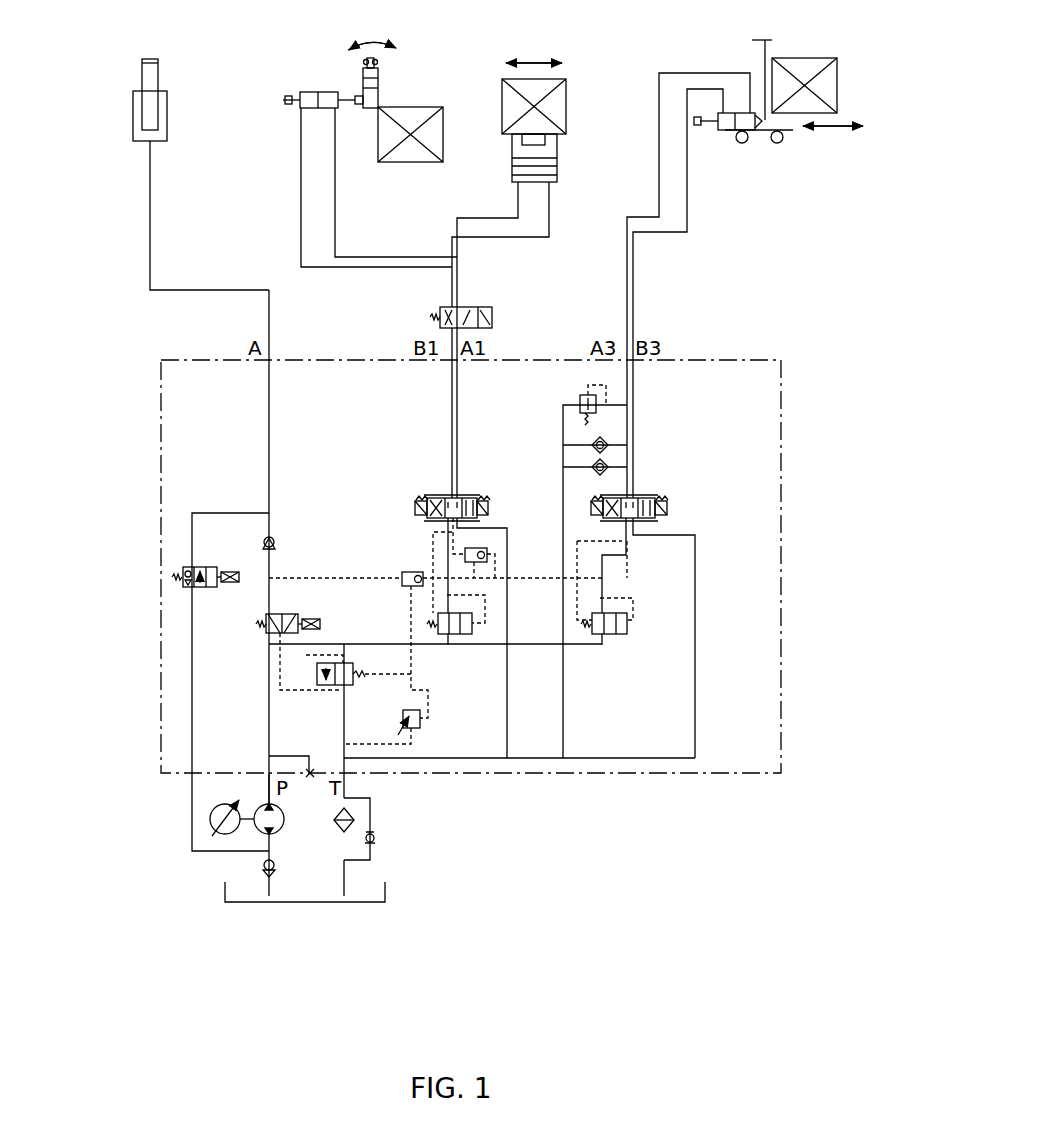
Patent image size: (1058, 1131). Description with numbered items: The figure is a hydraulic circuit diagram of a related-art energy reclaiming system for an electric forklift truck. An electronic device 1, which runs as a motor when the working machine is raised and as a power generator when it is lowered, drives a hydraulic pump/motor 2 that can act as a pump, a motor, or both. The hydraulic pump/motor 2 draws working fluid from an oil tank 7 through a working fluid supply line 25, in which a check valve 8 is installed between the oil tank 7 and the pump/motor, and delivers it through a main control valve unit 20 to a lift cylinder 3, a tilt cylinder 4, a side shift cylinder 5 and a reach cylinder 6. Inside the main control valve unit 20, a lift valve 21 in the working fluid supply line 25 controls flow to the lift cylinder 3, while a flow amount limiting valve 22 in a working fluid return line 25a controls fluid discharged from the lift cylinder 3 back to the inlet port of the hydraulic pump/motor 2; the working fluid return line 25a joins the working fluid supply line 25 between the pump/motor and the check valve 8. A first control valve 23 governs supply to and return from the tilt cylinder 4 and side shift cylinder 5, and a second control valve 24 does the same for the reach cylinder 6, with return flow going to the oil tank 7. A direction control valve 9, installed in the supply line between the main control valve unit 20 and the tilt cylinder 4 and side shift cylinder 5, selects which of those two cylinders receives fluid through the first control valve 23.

The electronic device 1 is at (204, 822).
The hydraulic pump/motor 2 is at (291, 834).
The lift cylinder 3 is at (124, 131).
The tilt cylinder 4 is at (300, 86).
The side shift cylinder 5 is at (497, 165).
The reach cylinder 6 is at (716, 142).
The oil tank 7 is at (285, 906).
The check valve 8 is at (265, 873).
The direction control valve 9 is at (481, 302).
The main control valve unit 20 is at (784, 680).
The lift valve 21 is at (291, 609).
The flow amount limiting valve 22 is at (181, 561).
The first control valve 23 is at (472, 493).
The second control valve 24 is at (662, 493).
The working fluid supply line 25 is at (269, 718).
The working fluid return line 25a is at (192, 652).